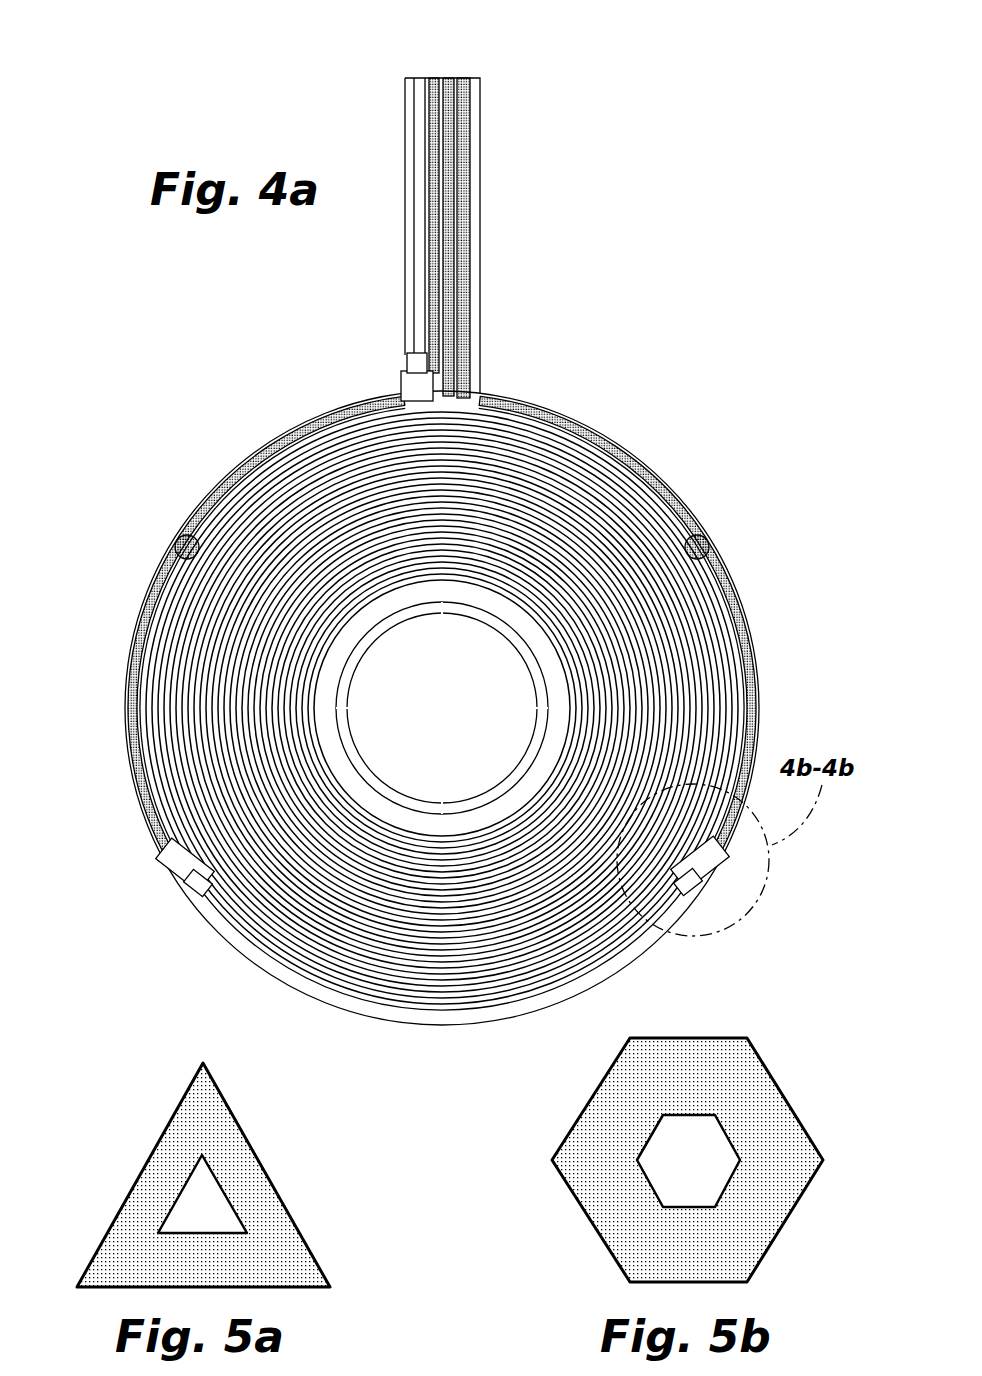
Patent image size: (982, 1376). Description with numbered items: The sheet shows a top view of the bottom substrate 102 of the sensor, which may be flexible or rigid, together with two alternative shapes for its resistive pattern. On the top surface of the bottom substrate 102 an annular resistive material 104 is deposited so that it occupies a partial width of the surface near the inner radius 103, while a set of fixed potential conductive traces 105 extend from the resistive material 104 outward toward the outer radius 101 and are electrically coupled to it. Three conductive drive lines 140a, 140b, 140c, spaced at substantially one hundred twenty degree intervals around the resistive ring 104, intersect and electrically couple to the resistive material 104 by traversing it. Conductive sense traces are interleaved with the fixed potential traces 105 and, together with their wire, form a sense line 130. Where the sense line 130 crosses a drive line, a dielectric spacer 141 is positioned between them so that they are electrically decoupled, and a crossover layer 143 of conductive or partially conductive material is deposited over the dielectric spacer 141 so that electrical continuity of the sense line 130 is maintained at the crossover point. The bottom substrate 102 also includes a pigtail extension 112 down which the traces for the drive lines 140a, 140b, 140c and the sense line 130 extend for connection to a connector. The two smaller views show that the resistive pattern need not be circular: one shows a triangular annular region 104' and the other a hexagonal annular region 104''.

In FIG. 4A, the outer radius 101 is at (125, 752).
In FIG. 4A, the bottom substrate 102 is at (609, 300).
In FIG. 4A, the inner radius 103 is at (352, 682).
In FIG. 4A, the annular resistive material 104 is at (442, 708).
In FIG. 4A, the fixed potential conductive traces 105 is at (722, 612).
In FIG. 4A, the pigtail extension 112 is at (482, 202).
In FIG. 4A, the sense line 130 is at (418, 78).
In FIG. 4A, the conductive drive line 140a is at (462, 78).
In FIG. 4A, the conductive drive line 140b is at (450, 78).
In FIG. 4A, the conductive drive line 140c is at (434, 78).
In FIG. 4A, the dielectric spacer 141 is at (402, 385).
In FIG. 4A, the crossover layer 143 is at (406, 360).
In FIG. 5A, the triangular annular region 104' is at (208, 1175).
In FIG. 5B, the hexagonal annular region 104'' is at (702, 1160).